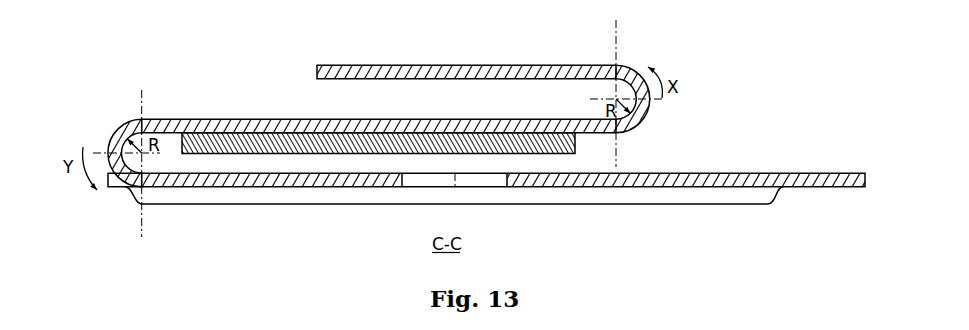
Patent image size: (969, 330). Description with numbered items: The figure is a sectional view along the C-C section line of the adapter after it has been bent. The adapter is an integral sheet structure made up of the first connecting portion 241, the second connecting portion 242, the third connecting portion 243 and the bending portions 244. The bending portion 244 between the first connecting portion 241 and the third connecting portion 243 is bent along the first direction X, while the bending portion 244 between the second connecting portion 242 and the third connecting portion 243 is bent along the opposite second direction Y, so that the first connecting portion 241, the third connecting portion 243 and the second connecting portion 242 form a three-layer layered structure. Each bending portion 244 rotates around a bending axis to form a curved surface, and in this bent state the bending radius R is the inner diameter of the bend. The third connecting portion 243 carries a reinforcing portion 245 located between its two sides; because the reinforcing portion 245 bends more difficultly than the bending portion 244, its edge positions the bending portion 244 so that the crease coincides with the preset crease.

The first connecting portion 241 is at (616, 48).
The second connecting portion 242 is at (182, 231).
The third connecting portion 243 is at (178, 89).
The bending portion 244 is at (133, 98).
The reinforcing portion 245 is at (388, 142).